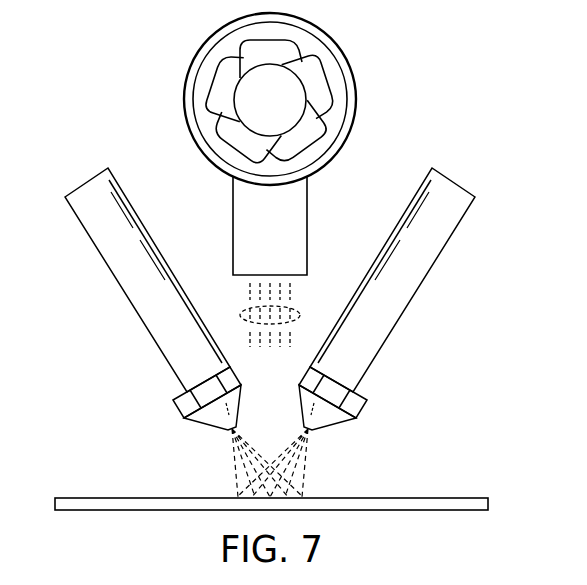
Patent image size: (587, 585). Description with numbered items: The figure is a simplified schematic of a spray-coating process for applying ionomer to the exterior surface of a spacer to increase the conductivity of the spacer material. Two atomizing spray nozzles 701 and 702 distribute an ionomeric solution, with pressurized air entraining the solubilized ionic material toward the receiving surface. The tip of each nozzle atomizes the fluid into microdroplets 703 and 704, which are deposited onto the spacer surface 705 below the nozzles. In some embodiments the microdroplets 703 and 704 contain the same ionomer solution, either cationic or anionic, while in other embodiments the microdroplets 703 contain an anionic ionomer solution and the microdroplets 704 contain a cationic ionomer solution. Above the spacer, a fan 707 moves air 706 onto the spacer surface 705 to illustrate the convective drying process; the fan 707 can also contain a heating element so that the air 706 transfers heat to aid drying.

The atomizing spray nozzle 701 is at (122, 297).
The atomizing spray nozzle 702 is at (418, 297).
The microdroplets 703 is at (231, 458).
The microdroplets 704 is at (309, 458).
The spacer surface 705 is at (133, 497).
The air 706 is at (240, 316).
The fan 707 is at (184, 103).